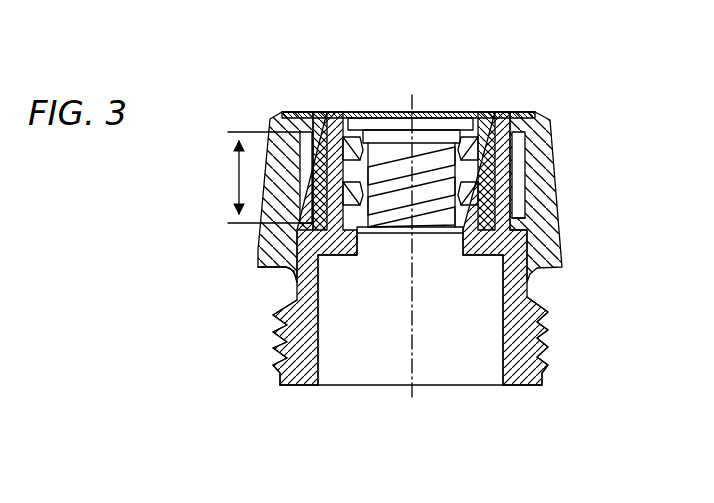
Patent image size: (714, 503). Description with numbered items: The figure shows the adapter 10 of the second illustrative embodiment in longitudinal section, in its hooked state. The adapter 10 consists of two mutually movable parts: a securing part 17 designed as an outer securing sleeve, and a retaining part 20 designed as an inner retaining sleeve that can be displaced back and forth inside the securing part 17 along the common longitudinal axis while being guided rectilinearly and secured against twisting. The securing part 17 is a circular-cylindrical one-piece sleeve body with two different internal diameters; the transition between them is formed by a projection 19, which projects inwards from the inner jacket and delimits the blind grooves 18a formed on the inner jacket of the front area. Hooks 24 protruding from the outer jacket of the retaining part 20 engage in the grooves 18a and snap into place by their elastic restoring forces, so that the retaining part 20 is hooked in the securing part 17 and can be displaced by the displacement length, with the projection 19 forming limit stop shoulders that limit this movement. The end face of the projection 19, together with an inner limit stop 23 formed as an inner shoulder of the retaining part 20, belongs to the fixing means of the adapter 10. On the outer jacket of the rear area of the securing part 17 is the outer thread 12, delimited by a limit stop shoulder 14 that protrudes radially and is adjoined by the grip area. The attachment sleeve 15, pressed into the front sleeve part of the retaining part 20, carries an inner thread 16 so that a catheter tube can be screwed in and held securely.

The adapter 10 is at (570, 92).
The outer thread 12 is at (548, 346).
The limit stop shoulder 14 is at (560, 276).
The attachment sleeve 15 is at (476, 132).
The inner thread 16 is at (467, 183).
The securing part 17 is at (545, 200).
The grooves 18a is at (515, 157).
The projection 19 is at (515, 226).
The retaining part 20 is at (290, 249).
The inner limit stop 23 is at (472, 262).
The hooks 24 is at (292, 110).